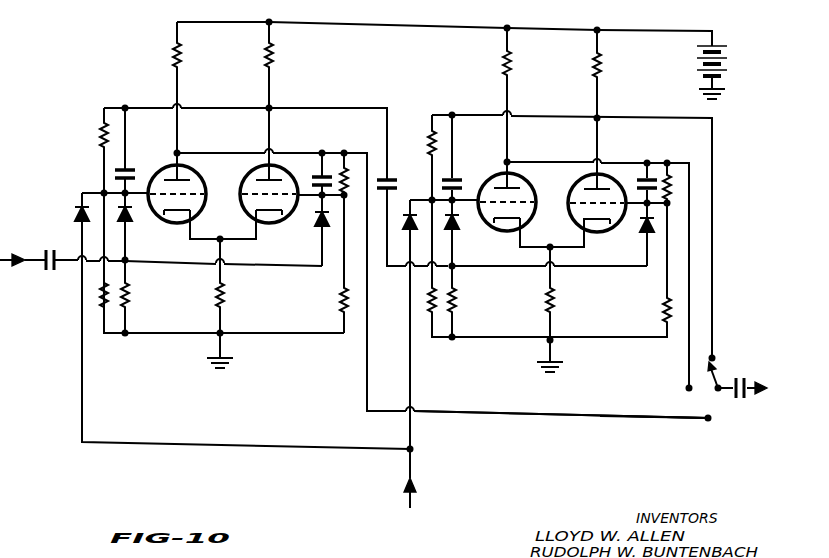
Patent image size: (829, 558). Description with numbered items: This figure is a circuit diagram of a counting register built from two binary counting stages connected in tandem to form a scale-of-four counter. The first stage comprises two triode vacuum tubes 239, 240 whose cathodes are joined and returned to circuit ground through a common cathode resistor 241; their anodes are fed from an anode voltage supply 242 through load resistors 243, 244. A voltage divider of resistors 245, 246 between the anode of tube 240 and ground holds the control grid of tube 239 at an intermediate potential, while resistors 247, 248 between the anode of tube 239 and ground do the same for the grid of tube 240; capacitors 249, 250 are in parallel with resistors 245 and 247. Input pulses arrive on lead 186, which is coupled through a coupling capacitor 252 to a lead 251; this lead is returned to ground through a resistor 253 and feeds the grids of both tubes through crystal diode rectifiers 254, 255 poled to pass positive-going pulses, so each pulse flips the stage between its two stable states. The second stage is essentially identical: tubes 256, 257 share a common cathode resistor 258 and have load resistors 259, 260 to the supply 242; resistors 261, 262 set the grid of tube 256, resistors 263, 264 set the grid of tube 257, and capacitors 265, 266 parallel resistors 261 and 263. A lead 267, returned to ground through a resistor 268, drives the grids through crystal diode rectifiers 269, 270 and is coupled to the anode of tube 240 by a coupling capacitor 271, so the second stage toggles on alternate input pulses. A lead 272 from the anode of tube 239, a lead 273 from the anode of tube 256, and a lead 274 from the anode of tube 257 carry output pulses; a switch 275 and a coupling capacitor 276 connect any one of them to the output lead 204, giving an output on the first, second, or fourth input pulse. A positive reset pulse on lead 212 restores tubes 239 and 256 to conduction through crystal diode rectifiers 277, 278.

The lead 186 is at (10, 256).
The output lead 204 is at (745, 406).
The lead 212 is at (412, 468).
The triode vacuum tube 239 is at (202, 176).
The triode vacuum tube 240 is at (246, 220).
The common cathode resistor 241 is at (215, 305).
The anode voltage supply 242 is at (696, 70).
The load resistor 243 is at (172, 65).
The load resistor 244 is at (265, 65).
The resistor 245 is at (98, 135).
The resistor 246 is at (96, 300).
The resistor 247 is at (346, 168).
The resistor 248 is at (336, 300).
The capacitor 249 is at (130, 170).
The capacitor 250 is at (307, 182).
The lead 251 is at (168, 258).
The coupling capacitor 252 is at (52, 249).
The resistor 253 is at (131, 298).
The crystal diode rectifier 254 is at (130, 222).
The crystal diode rectifier 255 is at (313, 228).
The triode vacuum tube 256 is at (526, 190).
The triode vacuum tube 257 is at (568, 223).
The common cathode resistor 258 is at (544, 312).
The load resistor 259 is at (500, 66).
The load resistor 260 is at (590, 70).
The resistor 261 is at (427, 142).
The resistor 262 is at (424, 308).
The resistor 263 is at (674, 172).
The resistor 264 is at (660, 310).
The capacitor 265 is at (456, 178).
The capacitor 266 is at (636, 178).
The lead 267 is at (506, 273).
The resistor 268 is at (457, 300).
The crystal diode rectifier 269 is at (458, 226).
The crystal diode rectifier 270 is at (640, 238).
The coupling capacitor 271 is at (391, 177).
The lead 272 is at (534, 420).
The lead 273 is at (686, 365).
The lead 274 is at (713, 350).
The switch 275 is at (716, 380).
The coupling capacitor 276 is at (730, 405).
The crystal diode rectifier 277 is at (78, 206).
The crystal diode rectifier 278 is at (404, 212).